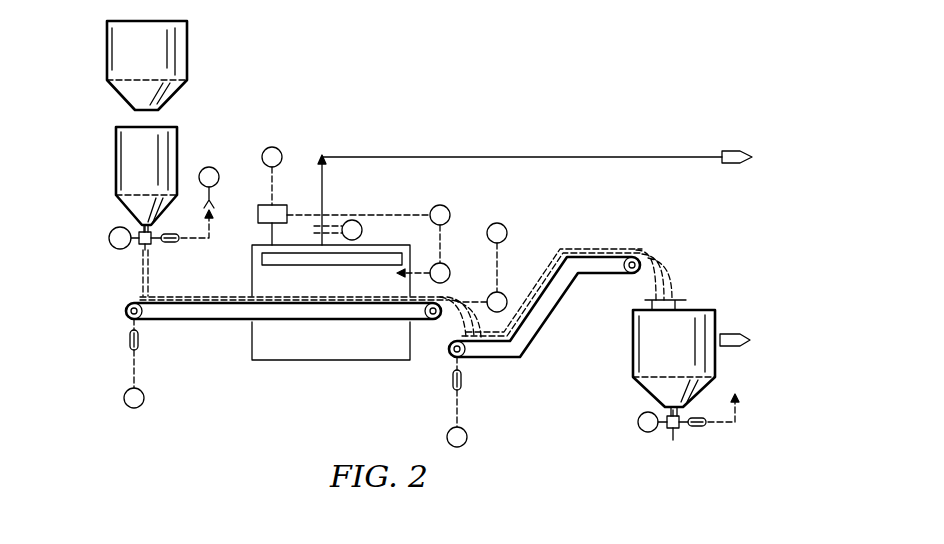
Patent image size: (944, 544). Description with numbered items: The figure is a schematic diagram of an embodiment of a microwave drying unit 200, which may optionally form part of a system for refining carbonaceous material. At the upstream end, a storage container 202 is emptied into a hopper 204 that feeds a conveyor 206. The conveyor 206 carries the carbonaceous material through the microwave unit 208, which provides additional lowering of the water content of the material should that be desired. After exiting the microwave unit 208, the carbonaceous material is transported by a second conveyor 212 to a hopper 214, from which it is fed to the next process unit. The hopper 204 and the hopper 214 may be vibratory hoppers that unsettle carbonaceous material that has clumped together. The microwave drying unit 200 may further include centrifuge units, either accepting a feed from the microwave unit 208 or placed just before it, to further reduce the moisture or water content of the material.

The microwave drying unit 200 is at (399, 229).
The storage container 202 is at (107, 52).
The hopper 204 is at (116, 160).
The conveyor 206 is at (212, 322).
The microwave unit 208 is at (315, 362).
The conveyor 212 is at (552, 318).
The hopper 214 is at (692, 308).